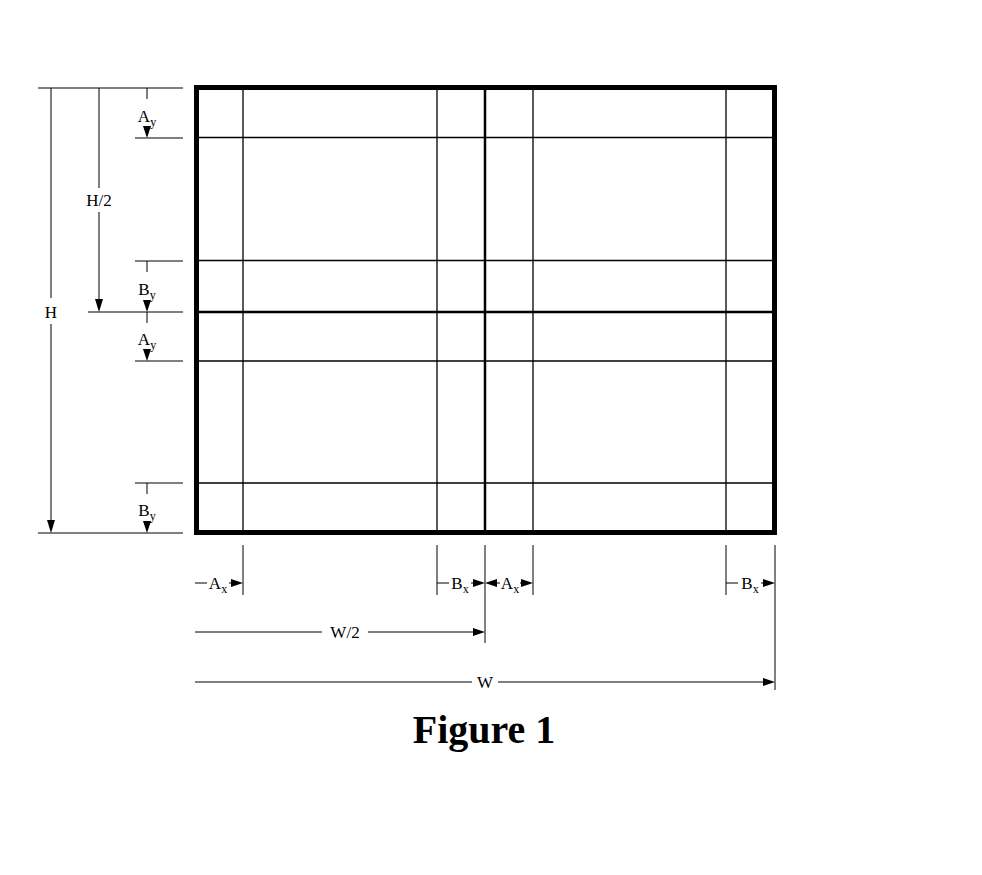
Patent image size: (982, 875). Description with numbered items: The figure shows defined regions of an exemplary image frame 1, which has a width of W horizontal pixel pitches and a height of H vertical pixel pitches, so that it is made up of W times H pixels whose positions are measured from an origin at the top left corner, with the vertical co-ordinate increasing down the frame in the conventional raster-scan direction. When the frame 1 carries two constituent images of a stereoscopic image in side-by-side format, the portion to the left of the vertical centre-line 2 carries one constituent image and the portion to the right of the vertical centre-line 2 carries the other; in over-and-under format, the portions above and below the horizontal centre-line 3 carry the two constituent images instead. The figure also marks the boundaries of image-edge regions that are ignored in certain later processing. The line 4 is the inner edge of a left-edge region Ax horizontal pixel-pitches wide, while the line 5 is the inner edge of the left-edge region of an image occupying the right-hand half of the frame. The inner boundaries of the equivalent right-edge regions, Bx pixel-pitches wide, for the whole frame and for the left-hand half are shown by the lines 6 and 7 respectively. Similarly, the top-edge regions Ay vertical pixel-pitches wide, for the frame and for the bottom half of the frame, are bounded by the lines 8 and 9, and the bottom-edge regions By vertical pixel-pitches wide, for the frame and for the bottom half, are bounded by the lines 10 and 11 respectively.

The image frame 1 is at (785, 84).
The vertical centre-line 2 is at (490, 110).
The horizontal centre-line 3 is at (753, 317).
The line 4 is at (248, 108).
The line 5 is at (540, 503).
The line 6 is at (720, 112).
The line 7 is at (430, 503).
The line 8 is at (748, 143).
The line 9 is at (222, 365).
The line 10 is at (750, 478).
The line 11 is at (750, 258).